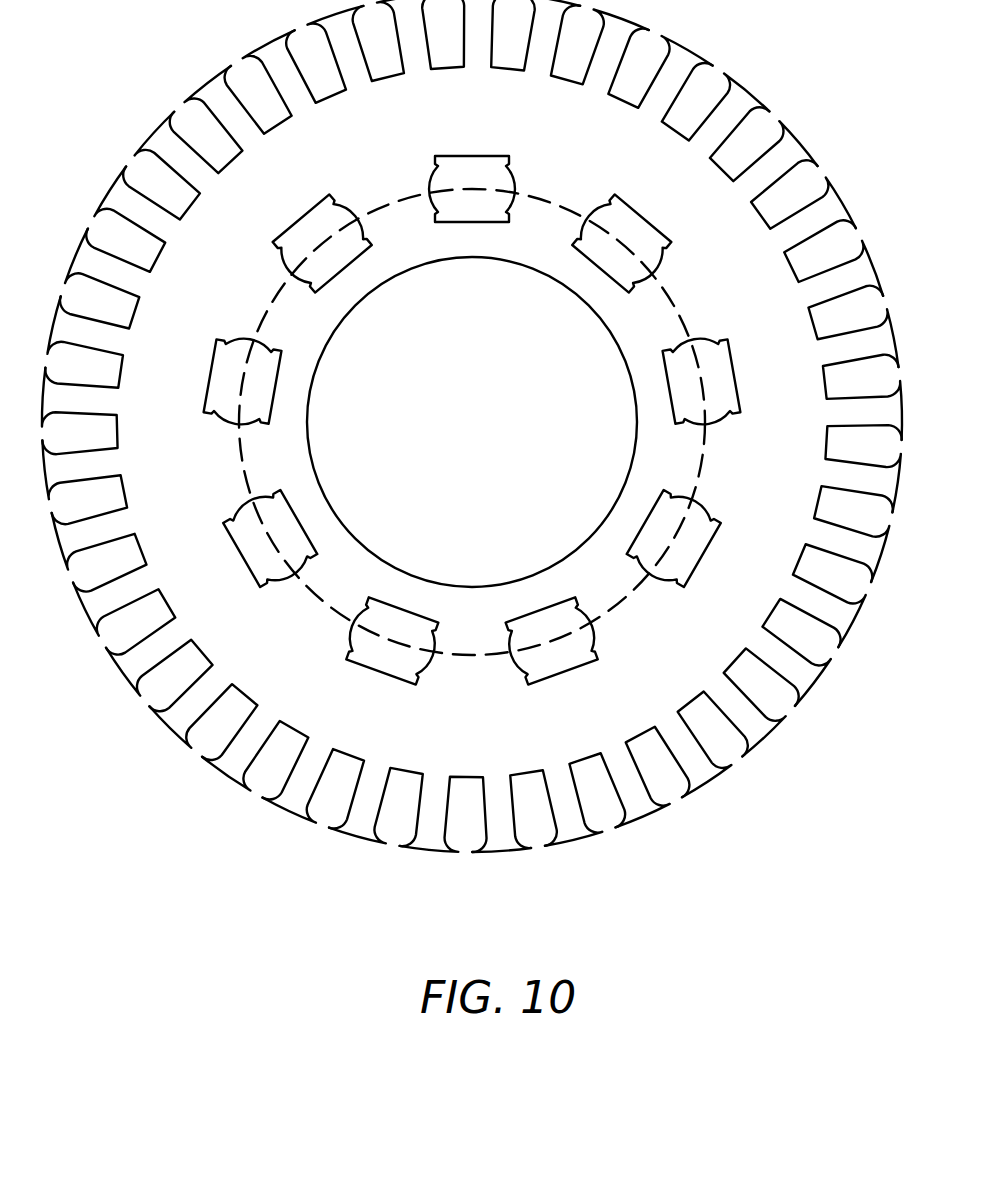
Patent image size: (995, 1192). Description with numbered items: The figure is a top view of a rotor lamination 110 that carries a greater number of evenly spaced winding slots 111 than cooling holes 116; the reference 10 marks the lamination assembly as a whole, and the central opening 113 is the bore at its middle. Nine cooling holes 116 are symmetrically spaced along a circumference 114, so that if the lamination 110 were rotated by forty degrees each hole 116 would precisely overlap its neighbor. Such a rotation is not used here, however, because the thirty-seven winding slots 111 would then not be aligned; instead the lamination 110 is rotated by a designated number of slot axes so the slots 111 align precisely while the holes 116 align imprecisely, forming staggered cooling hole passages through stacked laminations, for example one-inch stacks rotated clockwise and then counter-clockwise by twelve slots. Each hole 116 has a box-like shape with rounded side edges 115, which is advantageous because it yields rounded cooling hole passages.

The motor 10 is at (477, 428).
The lamination 110 is at (477, 428).
The winding slots 111 is at (104, 225).
The rotor bore 113 is at (491, 435).
The circumference 114 is at (465, 655).
The rounded side edges 115 is at (575, 647).
The cooling holes 116 is at (472, 421).